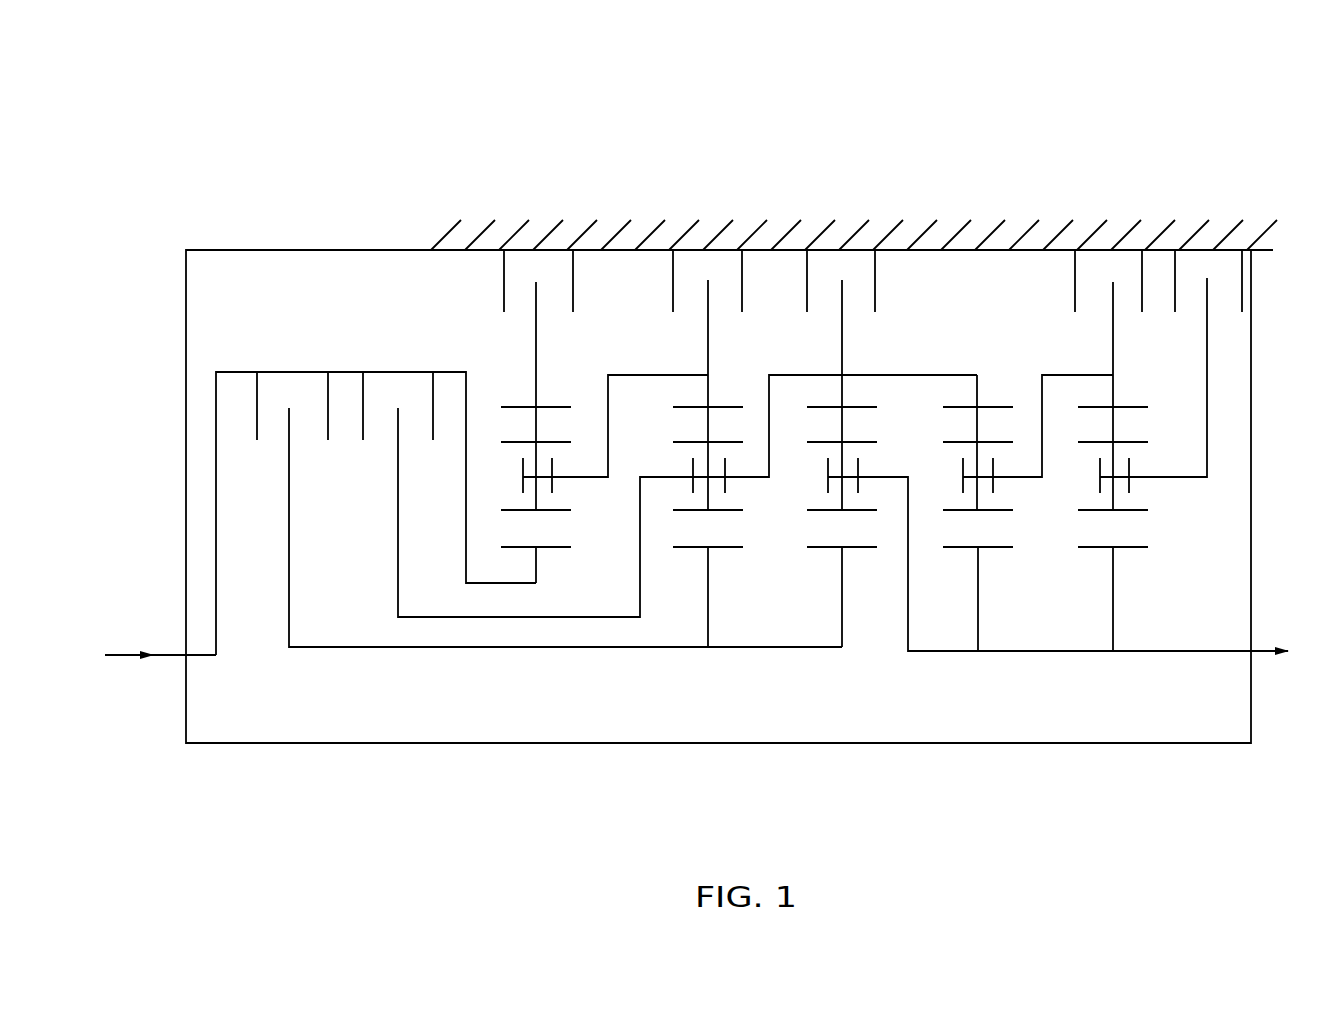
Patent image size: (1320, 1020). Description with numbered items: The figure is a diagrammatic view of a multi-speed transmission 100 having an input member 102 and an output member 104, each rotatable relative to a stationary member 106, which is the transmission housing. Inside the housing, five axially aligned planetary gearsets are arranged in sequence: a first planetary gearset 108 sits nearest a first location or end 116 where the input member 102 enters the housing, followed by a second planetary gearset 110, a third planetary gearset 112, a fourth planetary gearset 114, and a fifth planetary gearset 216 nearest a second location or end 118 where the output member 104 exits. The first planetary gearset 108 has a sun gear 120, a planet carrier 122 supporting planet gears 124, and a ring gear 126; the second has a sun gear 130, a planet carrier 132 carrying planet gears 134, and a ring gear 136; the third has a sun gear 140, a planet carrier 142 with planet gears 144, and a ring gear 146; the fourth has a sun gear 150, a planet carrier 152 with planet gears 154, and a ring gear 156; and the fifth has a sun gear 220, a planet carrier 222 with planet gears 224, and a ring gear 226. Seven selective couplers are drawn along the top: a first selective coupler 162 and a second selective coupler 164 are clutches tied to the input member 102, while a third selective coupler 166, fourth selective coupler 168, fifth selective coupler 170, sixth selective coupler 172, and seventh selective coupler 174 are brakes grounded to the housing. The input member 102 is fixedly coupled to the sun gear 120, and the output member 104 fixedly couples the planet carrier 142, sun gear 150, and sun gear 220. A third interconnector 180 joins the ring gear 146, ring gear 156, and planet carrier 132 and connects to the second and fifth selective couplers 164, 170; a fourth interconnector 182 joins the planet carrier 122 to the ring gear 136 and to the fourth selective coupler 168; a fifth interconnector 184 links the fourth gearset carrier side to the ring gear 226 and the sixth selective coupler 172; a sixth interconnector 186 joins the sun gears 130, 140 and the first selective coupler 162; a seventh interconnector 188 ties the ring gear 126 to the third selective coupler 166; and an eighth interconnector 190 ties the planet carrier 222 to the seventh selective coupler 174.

The multi-speed transmission 100 is at (1118, 94).
The input member 102 is at (122, 657).
The output member 104 is at (1262, 653).
The stationary member 106 is at (272, 250).
The first planetary gearset 108 is at (533, 750).
The second planetary gearset 110 is at (710, 750).
The third planetary gearset 112 is at (847, 750).
The fourth planetary gearset 114 is at (980, 750).
The fifth planetary gearset 216 is at (1120, 750).
The first location or end 116 is at (160, 550).
The second location or end 118 is at (1268, 550).
The sun gear 120 is at (557, 548).
The planet carrier 122 is at (553, 483).
The planet gears 124 is at (533, 507).
The ring gear 126 is at (550, 406).
The sun gear 130 is at (727, 548).
The planet carrier 132 is at (728, 483).
The planet gears 134 is at (703, 442).
The ring gear 136 is at (722, 406).
The sun gear 140 is at (860, 548).
The planet carrier 142 is at (860, 465).
The planet gears 144 is at (840, 442).
The ring gear 146 is at (860, 406).
The sun gear 150 is at (997, 548).
The planet carrier 152 is at (995, 483).
The planet gears 154 is at (976, 508).
The ring gear 156 is at (993, 406).
The first selective coupler 162 is at (298, 330).
The second selective coupler 164 is at (402, 330).
The third selective coupler 166 is at (547, 210).
The fourth selective coupler 168 is at (717, 210).
The fifth selective coupler 170 is at (852, 210).
The sixth selective coupler 172 is at (1112, 208).
The seventh selective coupler 174 is at (1217, 208).
The third interconnector 180 is at (934, 374).
The fourth interconnector 182 is at (637, 375).
The fifth interconnector 184 is at (1065, 374).
The sixth interconnector 186 is at (783, 647).
The seventh interconnector 188 is at (535, 368).
The eighth interconnector 190 is at (1207, 378).
The sun gear 220 is at (1130, 548).
The planet carrier 222 is at (1131, 483).
The planet gears 224 is at (1111, 444).
The ring gear 226 is at (1125, 406).